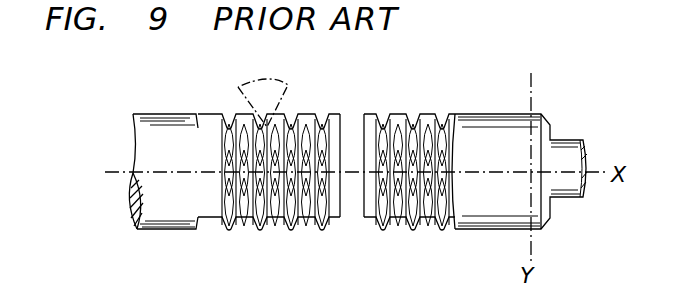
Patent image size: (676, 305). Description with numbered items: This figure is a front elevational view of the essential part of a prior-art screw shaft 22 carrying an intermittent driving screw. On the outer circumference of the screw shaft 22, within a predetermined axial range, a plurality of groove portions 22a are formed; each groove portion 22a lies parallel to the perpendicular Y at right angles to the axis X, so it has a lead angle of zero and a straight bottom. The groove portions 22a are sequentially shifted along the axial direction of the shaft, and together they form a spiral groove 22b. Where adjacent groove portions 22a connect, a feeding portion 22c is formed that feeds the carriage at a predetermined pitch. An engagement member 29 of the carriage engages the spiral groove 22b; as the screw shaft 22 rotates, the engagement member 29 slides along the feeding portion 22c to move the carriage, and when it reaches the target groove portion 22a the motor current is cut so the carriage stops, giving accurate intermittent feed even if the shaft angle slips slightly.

The screw shaft 22 is at (493, 112).
The groove portions 22a is at (310, 222).
The spiral groove 22b is at (263, 168).
The feeding portion 22c is at (409, 222).
The engagement member 29 is at (284, 95).